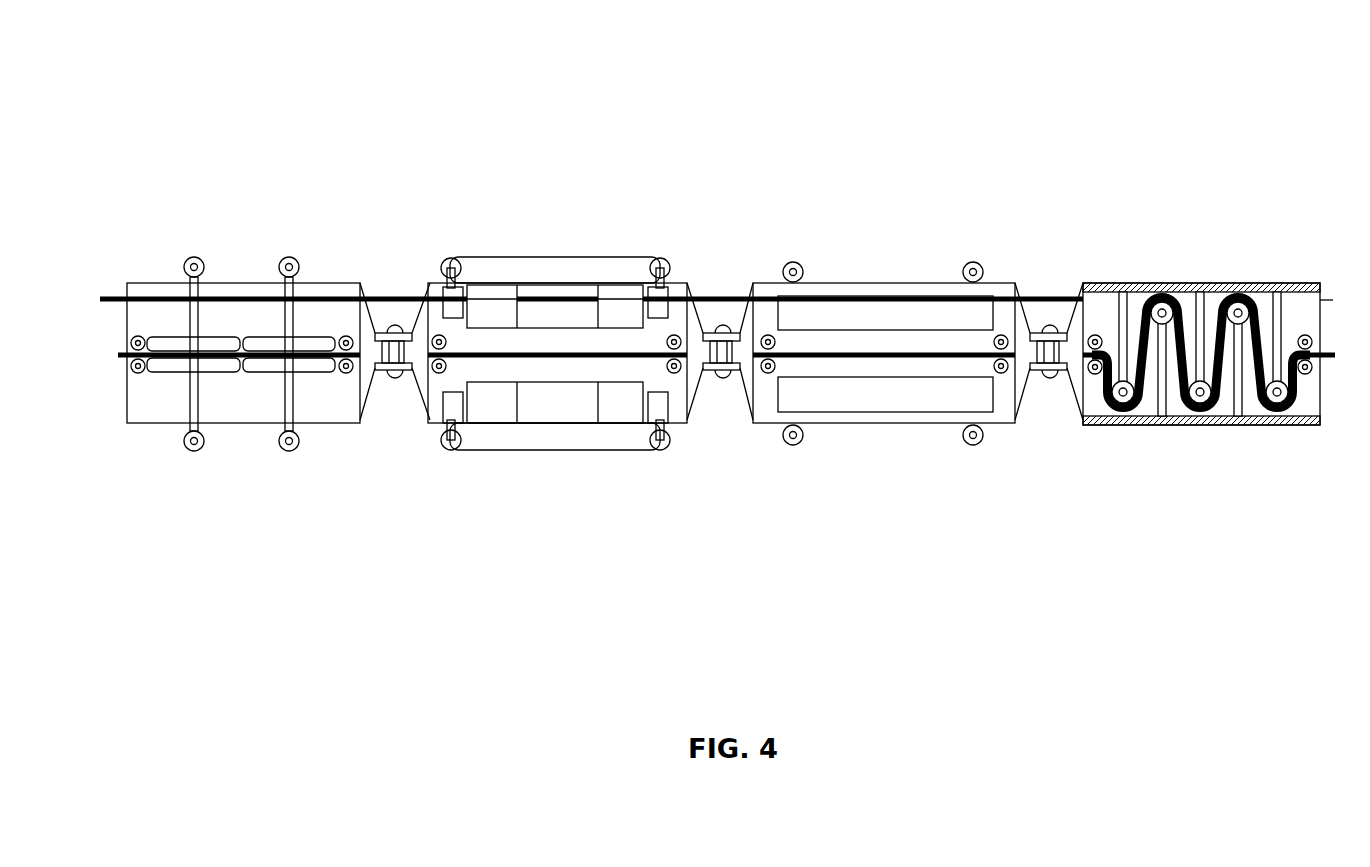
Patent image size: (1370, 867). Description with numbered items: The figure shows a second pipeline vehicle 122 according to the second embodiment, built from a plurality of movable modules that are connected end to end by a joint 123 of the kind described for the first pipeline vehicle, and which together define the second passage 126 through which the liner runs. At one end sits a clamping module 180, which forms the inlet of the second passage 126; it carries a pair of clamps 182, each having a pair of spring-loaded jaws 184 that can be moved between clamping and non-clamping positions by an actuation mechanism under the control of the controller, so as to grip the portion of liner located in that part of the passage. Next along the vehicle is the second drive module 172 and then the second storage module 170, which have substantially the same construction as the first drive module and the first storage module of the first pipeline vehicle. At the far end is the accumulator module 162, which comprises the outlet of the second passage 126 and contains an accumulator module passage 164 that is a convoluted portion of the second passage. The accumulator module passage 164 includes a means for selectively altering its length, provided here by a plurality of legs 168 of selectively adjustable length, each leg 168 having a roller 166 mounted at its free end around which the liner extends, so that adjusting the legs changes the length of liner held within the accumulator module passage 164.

The second pipeline vehicle 122 is at (666, 66).
The joint 123 is at (395, 330).
The second passage 126 is at (947, 365).
The accumulator module 162 is at (1298, 287).
The accumulator module passage 164 is at (1158, 422).
The roller 166 is at (1172, 303).
The leg 168 is at (1125, 355).
The second storage module 170 is at (903, 283).
The second drive module 172 is at (557, 257).
The clamping module 180 is at (322, 283).
The clamp pad 182 is at (280, 415).
The bolt 184 is at (180, 336).